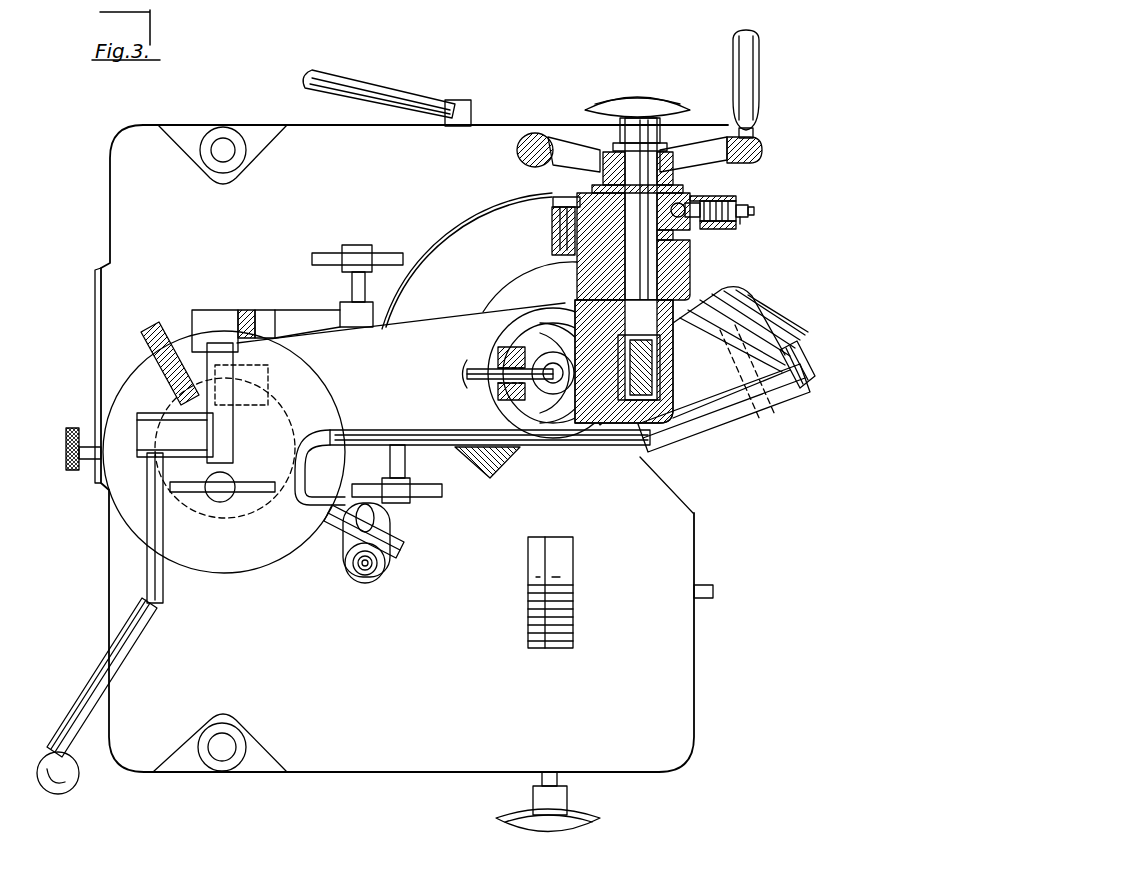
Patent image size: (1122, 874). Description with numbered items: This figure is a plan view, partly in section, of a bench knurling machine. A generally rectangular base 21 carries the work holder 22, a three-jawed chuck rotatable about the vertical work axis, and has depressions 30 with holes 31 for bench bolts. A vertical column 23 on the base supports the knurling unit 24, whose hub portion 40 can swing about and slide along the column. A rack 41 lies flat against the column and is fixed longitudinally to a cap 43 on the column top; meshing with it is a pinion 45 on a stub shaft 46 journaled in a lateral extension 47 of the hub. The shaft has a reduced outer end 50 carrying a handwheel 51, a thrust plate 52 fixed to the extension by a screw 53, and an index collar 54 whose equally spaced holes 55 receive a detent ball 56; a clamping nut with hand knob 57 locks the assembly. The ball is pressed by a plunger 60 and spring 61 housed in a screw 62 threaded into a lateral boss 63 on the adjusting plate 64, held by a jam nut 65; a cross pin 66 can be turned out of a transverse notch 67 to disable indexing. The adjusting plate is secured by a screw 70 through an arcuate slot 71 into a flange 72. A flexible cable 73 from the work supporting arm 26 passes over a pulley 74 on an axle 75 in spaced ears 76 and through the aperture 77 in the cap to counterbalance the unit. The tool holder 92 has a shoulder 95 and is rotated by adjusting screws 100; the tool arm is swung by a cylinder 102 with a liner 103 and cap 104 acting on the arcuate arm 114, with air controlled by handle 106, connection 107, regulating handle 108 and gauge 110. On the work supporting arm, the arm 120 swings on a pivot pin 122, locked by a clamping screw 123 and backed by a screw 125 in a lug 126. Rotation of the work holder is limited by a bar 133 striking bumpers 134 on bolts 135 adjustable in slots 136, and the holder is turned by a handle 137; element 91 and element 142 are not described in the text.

The base 21 is at (448, 730).
The work holder 22 is at (268, 574).
The column 23 is at (557, 361).
The knurling unit 24 is at (609, 464).
The work supporting arm 26 is at (440, 312).
The depressions 30 is at (270, 148).
The holes 31 is at (222, 140).
The hub portion 40 is at (572, 412).
The rack 41 is at (652, 370).
The cap 43 is at (618, 446).
The pinion 45 is at (660, 355).
The stub shaft 46 is at (665, 280).
The lateral extension 47 is at (577, 280).
The reduced outer end 50 is at (672, 160).
The handwheel 51 is at (762, 150).
The thrust plate 52 is at (577, 255).
The screw 53 is at (690, 260).
The index collar 54 is at (680, 170).
The holes 55 is at (641, 259).
The ball 56 is at (683, 205).
The hand knob 57 is at (640, 100).
The plunger 60 is at (748, 210).
The spring 61 is at (725, 229).
The screw 62 is at (736, 204).
The lateral boss 63 is at (700, 205).
The adjusting plate 64 is at (592, 188).
The jam nut 65 is at (720, 196).
The cross pin 66 is at (754, 212).
The transverse notch 67 is at (742, 222).
The screw 70 is at (553, 202).
The arcuate slot 71 is at (552, 220).
The flange 72 is at (560, 240).
The flexible cable 73 is at (467, 373).
The pulley 74 is at (470, 386).
The axle 75 is at (500, 358).
The spaced ears 76 is at (500, 350).
The central aperture 77 is at (540, 420).
The block 91 is at (210, 310).
The tool holder 92 is at (248, 310).
The shoulder 95 is at (270, 310).
The adjusting screws 100 is at (352, 290).
The cylinder 102 is at (762, 318).
The liner 103 is at (810, 360).
The cap 104 is at (742, 420).
The control handle 106 is at (380, 88).
The connection 107 is at (713, 585).
The control handle 108 is at (550, 832).
The gauge 110 is at (565, 604).
The arcuately shaped arm 114 is at (465, 218).
The arm 120 is at (215, 437).
The pivot pin 122 is at (268, 380).
The clamping screw 123 is at (207, 415).
The backing screw 125 is at (232, 498).
The lug 126 is at (205, 510).
The bar 133 is at (398, 550).
The bumpers 134 is at (385, 566).
The bolt 135 is at (366, 572).
The slot 136 is at (375, 518).
The handle 137 is at (85, 765).
The knob 142 is at (85, 460).